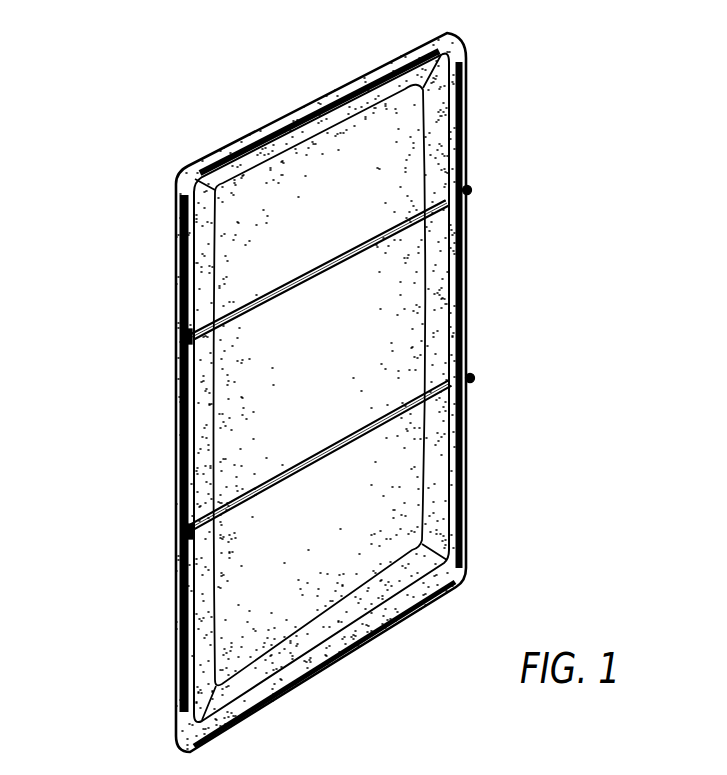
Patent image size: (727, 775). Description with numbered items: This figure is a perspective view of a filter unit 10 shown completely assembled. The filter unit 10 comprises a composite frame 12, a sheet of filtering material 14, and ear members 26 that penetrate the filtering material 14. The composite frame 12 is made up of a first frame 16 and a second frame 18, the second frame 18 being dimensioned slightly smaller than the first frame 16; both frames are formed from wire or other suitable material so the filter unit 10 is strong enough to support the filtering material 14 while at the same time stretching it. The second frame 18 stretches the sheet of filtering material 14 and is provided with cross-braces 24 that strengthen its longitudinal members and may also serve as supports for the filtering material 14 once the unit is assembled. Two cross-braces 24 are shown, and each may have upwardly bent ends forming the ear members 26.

The filter unit 10 is at (485, 139).
The composite frame 12 is at (185, 183).
The sheet of filtering material 14 is at (378, 355).
The first frame 16 is at (470, 430).
The second frame 18 is at (447, 403).
The cross-braces 24 is at (205, 313).
The ear members 26 is at (187, 347).